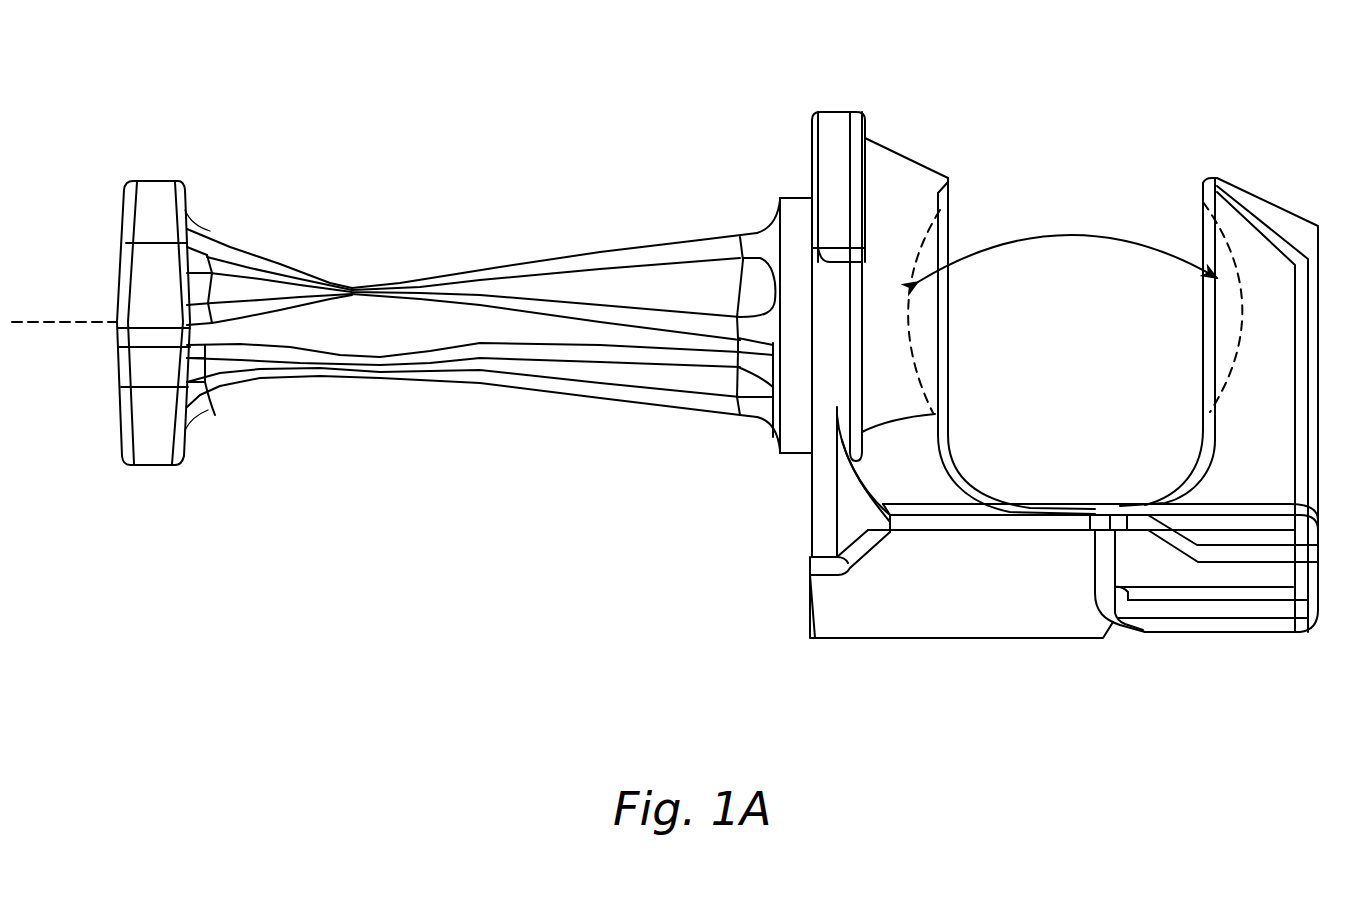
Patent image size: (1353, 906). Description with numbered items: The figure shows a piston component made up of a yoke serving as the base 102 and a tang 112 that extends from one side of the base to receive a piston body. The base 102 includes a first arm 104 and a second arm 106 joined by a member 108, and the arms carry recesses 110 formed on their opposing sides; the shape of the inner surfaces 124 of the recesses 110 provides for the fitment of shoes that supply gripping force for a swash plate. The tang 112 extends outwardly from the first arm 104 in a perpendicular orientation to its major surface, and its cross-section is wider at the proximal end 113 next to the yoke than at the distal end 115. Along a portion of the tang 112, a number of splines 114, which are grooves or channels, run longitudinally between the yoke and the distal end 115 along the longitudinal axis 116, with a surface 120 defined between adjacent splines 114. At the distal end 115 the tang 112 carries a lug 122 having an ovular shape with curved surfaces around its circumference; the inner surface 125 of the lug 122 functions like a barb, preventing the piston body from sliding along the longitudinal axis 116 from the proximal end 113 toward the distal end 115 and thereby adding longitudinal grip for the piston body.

The base 102 is at (1074, 84).
The first arm 104 is at (897, 187).
The second arm 106 is at (1247, 220).
The member 108 is at (982, 602).
The recesses 110 is at (1077, 232).
The tang 112 is at (426, 430).
The proximal end 113 is at (744, 193).
The spline 114 is at (318, 287).
The distal end 115 is at (248, 204).
The longitudinal axis 116 is at (60, 319).
The surface 120 is at (433, 313).
The lug 122 is at (152, 467).
The inner surfaces 124 is at (943, 216).
The inner surface 125 is at (187, 212).